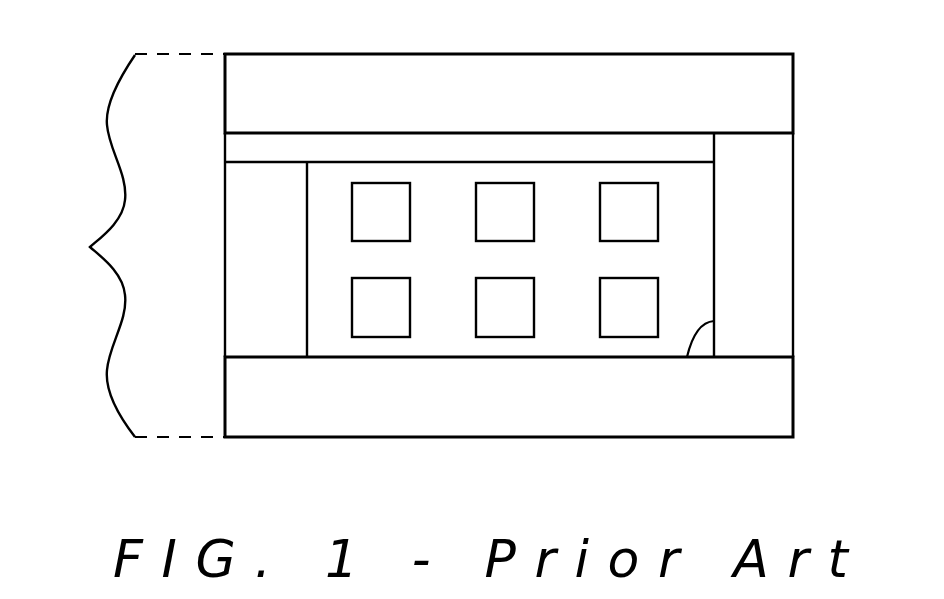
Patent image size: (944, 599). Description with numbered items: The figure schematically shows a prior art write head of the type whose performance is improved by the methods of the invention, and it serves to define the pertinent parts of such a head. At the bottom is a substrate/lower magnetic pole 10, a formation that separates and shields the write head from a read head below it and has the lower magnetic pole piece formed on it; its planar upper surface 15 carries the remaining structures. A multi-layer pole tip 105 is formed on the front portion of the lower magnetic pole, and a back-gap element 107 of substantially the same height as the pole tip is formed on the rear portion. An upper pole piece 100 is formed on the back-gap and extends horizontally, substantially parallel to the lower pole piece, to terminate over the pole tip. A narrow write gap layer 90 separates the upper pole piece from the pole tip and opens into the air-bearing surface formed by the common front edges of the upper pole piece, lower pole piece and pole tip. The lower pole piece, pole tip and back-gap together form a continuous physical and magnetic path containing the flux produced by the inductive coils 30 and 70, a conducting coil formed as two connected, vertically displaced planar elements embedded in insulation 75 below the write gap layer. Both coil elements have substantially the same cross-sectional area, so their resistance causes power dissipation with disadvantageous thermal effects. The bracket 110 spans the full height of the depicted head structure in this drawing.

The substrate/lower magnetic pole 10 is at (765, 402).
The planar upper surface 15 is at (714, 321).
The inductive coil 30 is at (628, 320).
The inductive coil 70 is at (627, 207).
The insulation 75 is at (442, 187).
The write gap layer 90 is at (265, 147).
The upper pole piece 100 is at (765, 92).
The multi-layer pole tip 105 is at (272, 340).
The back-gap element 107 is at (765, 222).
The display device 110 is at (128, 245).